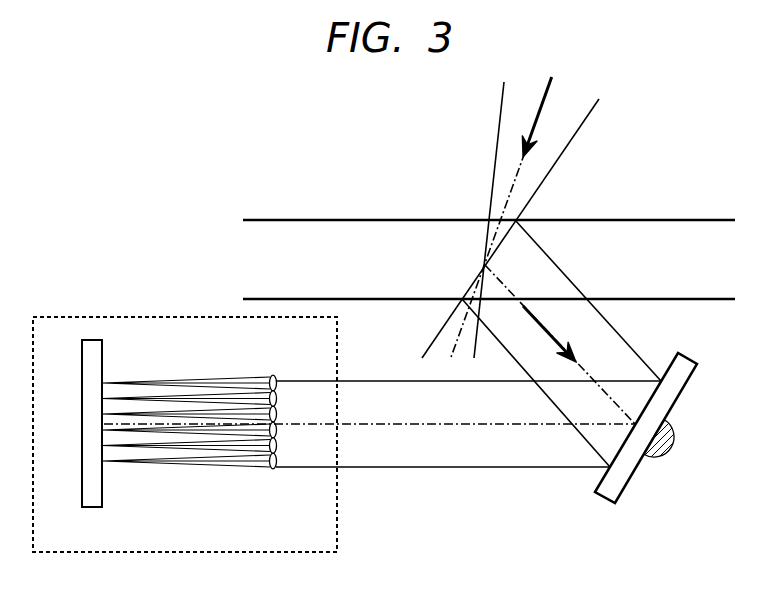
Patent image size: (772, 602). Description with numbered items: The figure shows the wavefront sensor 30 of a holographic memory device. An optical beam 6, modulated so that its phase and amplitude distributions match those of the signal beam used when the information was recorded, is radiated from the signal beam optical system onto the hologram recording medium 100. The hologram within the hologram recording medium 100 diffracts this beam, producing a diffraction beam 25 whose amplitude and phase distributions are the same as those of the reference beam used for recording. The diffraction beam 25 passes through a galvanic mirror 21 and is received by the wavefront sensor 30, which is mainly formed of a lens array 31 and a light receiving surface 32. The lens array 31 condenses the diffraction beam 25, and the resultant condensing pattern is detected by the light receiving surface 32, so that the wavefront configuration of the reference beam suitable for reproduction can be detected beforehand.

The optical beam 6 is at (580, 120).
The hologram recording medium 100 is at (672, 228).
The galvanic mirror 21 is at (677, 387).
The diffraction beam 25 is at (482, 462).
The wavefront sensor 30 is at (332, 518).
The lens array 31 is at (272, 469).
The light receiving surface 32 is at (97, 488).